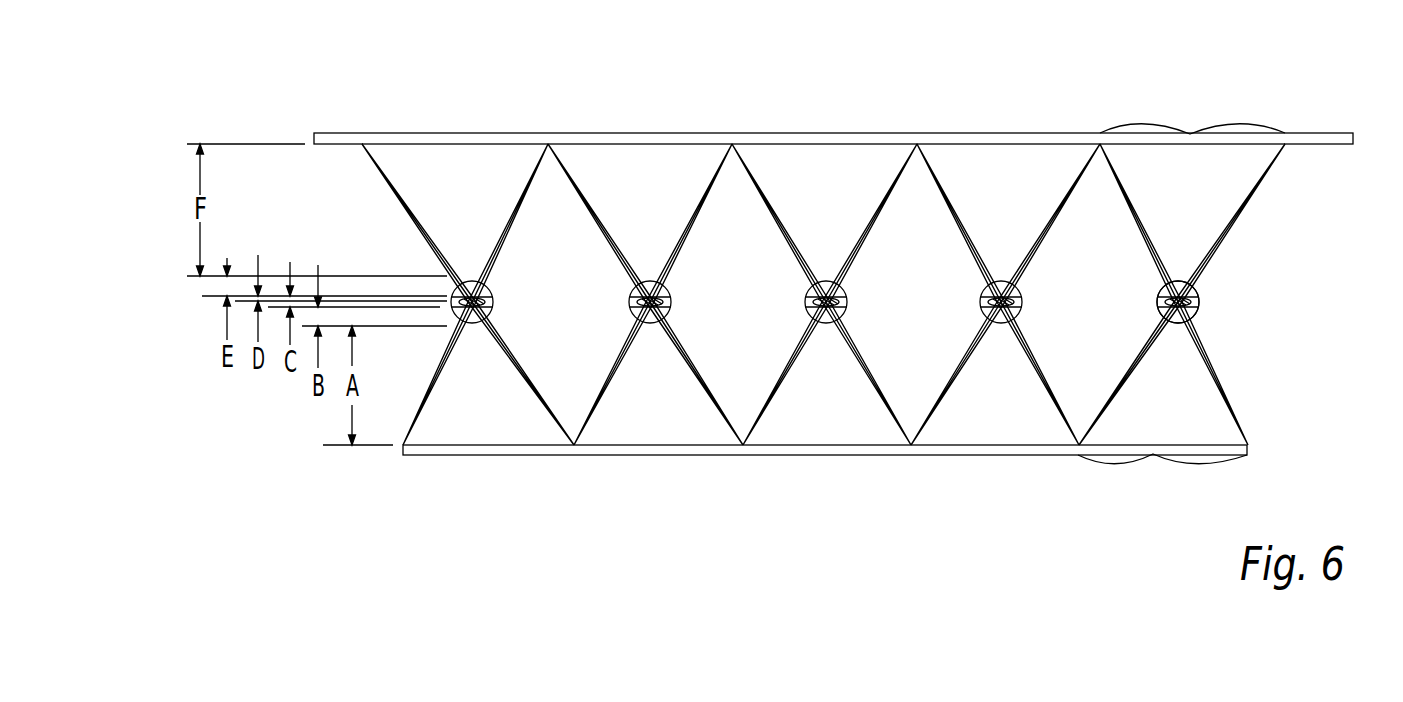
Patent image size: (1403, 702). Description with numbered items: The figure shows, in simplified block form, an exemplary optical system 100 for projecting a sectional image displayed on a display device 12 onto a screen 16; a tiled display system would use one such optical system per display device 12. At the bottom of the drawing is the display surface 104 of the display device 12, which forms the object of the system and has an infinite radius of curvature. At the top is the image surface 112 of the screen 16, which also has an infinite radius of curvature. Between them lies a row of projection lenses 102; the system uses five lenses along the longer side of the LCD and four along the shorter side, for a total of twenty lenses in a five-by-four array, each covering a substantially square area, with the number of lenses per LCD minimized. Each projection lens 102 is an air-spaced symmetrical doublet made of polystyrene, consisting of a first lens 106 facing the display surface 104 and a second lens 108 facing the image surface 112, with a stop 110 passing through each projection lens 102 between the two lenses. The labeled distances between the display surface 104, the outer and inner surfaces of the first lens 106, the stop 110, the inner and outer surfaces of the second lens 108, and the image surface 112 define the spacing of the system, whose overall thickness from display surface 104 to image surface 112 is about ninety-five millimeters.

The optical system 100 is at (178, 63).
The screen 16 is at (1340, 132).
The display device 12 is at (1042, 456).
The image surface 112 is at (1192, 133).
The display surface 104 is at (1163, 460).
The projection lens 102 is at (1198, 290).
The second lens 108 is at (1178, 276).
The first lens 106 is at (1167, 326).
The stop 110 is at (1203, 312).